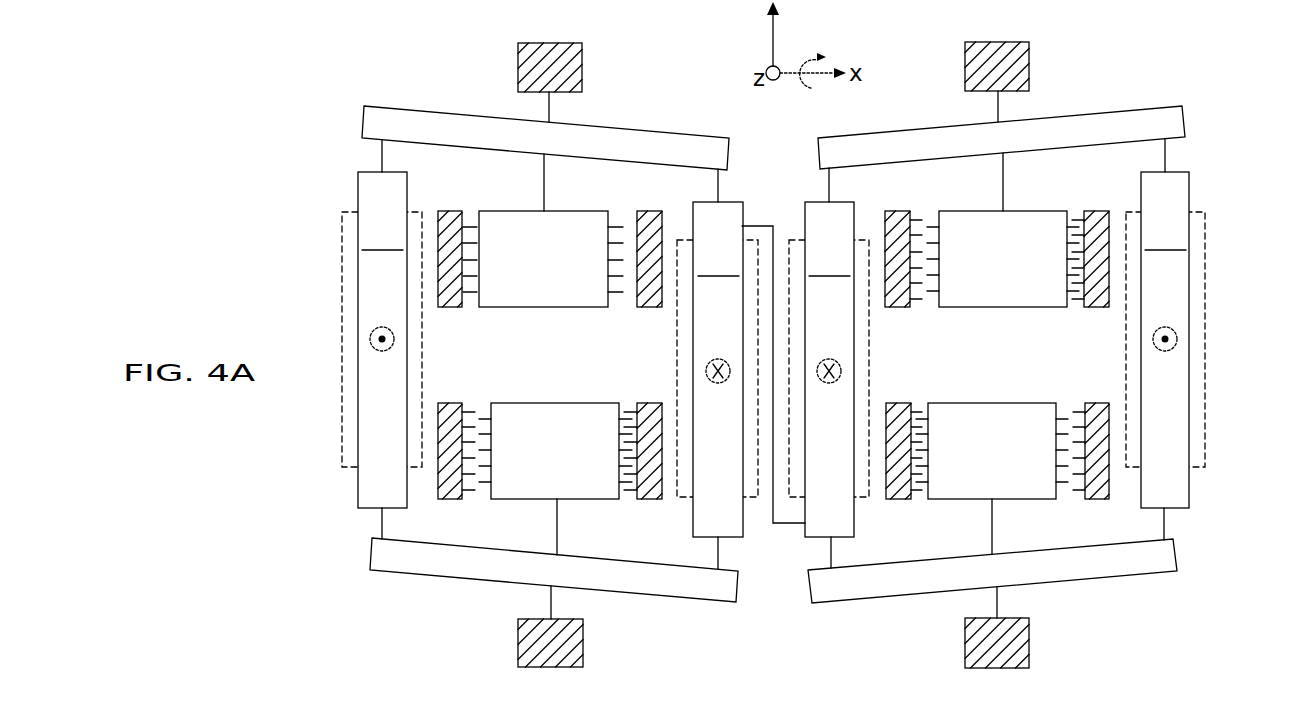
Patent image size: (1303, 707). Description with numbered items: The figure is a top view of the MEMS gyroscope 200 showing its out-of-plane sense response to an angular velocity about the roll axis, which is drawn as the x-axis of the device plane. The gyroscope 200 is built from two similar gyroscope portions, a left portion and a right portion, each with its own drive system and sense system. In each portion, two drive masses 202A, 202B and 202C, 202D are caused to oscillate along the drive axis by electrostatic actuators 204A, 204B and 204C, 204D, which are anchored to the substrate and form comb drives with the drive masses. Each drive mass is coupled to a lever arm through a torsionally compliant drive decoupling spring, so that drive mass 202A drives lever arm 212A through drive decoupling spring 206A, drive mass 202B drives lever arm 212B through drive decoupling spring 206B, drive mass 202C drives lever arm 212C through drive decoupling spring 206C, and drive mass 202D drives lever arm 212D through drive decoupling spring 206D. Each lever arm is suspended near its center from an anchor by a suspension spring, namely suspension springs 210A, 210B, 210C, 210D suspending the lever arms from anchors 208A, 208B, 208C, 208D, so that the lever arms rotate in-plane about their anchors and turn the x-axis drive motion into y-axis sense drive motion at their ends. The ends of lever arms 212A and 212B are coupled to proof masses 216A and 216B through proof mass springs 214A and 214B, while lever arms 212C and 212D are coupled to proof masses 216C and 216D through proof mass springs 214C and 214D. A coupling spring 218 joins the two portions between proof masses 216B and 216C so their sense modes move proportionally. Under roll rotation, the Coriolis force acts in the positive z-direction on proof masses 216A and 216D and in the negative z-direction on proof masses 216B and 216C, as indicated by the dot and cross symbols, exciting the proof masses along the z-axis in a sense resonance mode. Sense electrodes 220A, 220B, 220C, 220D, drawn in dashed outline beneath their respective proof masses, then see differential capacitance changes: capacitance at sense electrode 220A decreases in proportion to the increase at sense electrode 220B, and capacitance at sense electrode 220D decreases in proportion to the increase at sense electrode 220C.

The gyroscope 200 is at (247, 561).
The drive mass 202A is at (556, 309).
The drive mass 202B is at (557, 401).
The drive mass 202C is at (1000, 309).
The drive mass 202D is at (1000, 401).
The electrostatic actuator 204A is at (449, 316).
The electrostatic actuator 204B is at (449, 394).
The electrostatic actuator 204C is at (898, 316).
The electrostatic actuator 204D is at (898, 394).
The drive decoupling spring 206A is at (532, 172).
The drive decoupling spring 206B is at (545, 540).
The drive decoupling spring 206C is at (1015, 173).
The drive decoupling spring 206D is at (1005, 540).
The anchor 208A is at (594, 68).
The anchor 208B is at (596, 643).
The anchor 208C is at (1043, 66).
The anchor 208D is at (1045, 643).
The suspension spring 210A is at (562, 113).
The suspension spring 210B is at (536, 600).
The suspension spring 210C is at (982, 115).
The suspension spring 210D is at (1012, 598).
The lever arm 212A is at (366, 104).
The lever arm 212B is at (392, 574).
The lever arm 212C is at (1167, 104).
The lever arm 212D is at (1160, 575).
The proof mass spring 214A is at (368, 157).
The proof mass spring 214B is at (705, 186).
The proof mass spring 214C is at (845, 185).
The proof mass spring 214D is at (1180, 157).
The proof mass 216A is at (382, 340).
The proof mass 216B is at (718, 369).
The proof mass 216C is at (829, 369).
The proof mass 216D is at (1165, 340).
The coupling spring 218 is at (766, 201).
The sense electrode 220A is at (342, 431).
The sense electrode 220B is at (759, 499).
The sense electrode 220C is at (790, 238).
The sense electrode 220D is at (1206, 432).